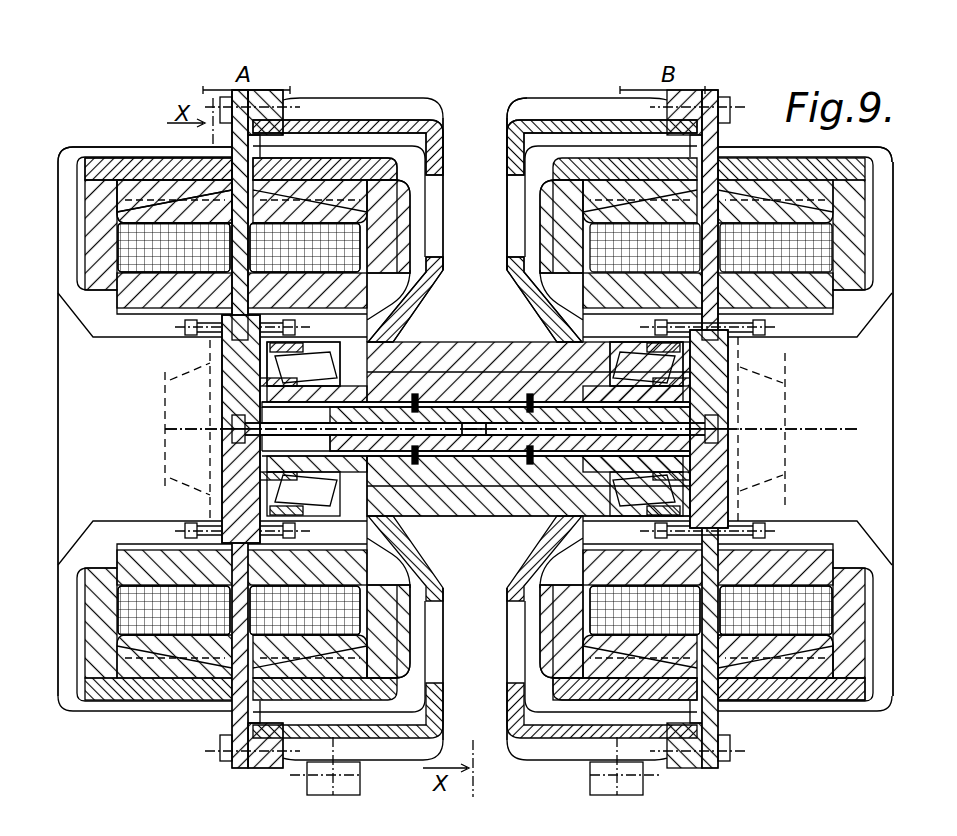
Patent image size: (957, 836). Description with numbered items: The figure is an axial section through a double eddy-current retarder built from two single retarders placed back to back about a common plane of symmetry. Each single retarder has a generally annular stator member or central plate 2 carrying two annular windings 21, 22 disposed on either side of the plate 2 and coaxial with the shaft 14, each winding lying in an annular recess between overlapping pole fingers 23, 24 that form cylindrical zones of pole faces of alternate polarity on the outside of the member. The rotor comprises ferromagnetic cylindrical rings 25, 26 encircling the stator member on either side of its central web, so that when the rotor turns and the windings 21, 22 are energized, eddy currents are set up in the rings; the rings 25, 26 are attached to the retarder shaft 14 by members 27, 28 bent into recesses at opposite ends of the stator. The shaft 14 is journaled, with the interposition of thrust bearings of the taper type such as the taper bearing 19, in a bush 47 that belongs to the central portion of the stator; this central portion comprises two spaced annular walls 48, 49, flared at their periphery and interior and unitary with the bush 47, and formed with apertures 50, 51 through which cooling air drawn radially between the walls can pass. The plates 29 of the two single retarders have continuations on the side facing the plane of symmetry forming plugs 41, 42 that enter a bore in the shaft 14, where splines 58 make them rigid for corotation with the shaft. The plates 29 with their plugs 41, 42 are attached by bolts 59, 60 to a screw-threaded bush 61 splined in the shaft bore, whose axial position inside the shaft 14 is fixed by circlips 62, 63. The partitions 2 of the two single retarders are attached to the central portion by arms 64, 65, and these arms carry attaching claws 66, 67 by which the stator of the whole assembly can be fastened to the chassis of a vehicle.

The central plate 2 is at (235, 143).
The shaft 14 is at (473, 468).
The taper bearing 19 is at (283, 373).
The annular winding 21 is at (153, 242).
The annular winding 22 is at (290, 240).
The pole finger 23 is at (140, 190).
The pole finger 24 is at (207, 197).
The cylindrical ring 25 is at (100, 167).
The cylindrical ring 26 is at (290, 170).
The member 27 is at (67, 260).
The member 28 is at (530, 197).
The plate 29 is at (247, 370).
The plug 41 is at (290, 447).
The plug 42 is at (690, 445).
The bush 47 is at (453, 497).
The annular wall 48 is at (437, 160).
The annular wall 49 is at (502, 127).
The aperture 50 is at (433, 225).
The aperture 51 is at (513, 247).
The splines 58 is at (370, 402).
The bolt 59 is at (277, 427).
The bolt 60 is at (677, 453).
The screw-threaded bush 61 is at (472, 415).
The circlip 62 is at (413, 402).
The circlip 63 is at (528, 402).
The arm 64 is at (400, 125).
The arm 65 is at (567, 127).
The attaching claw 66 is at (343, 783).
The attaching claw 67 is at (643, 783).